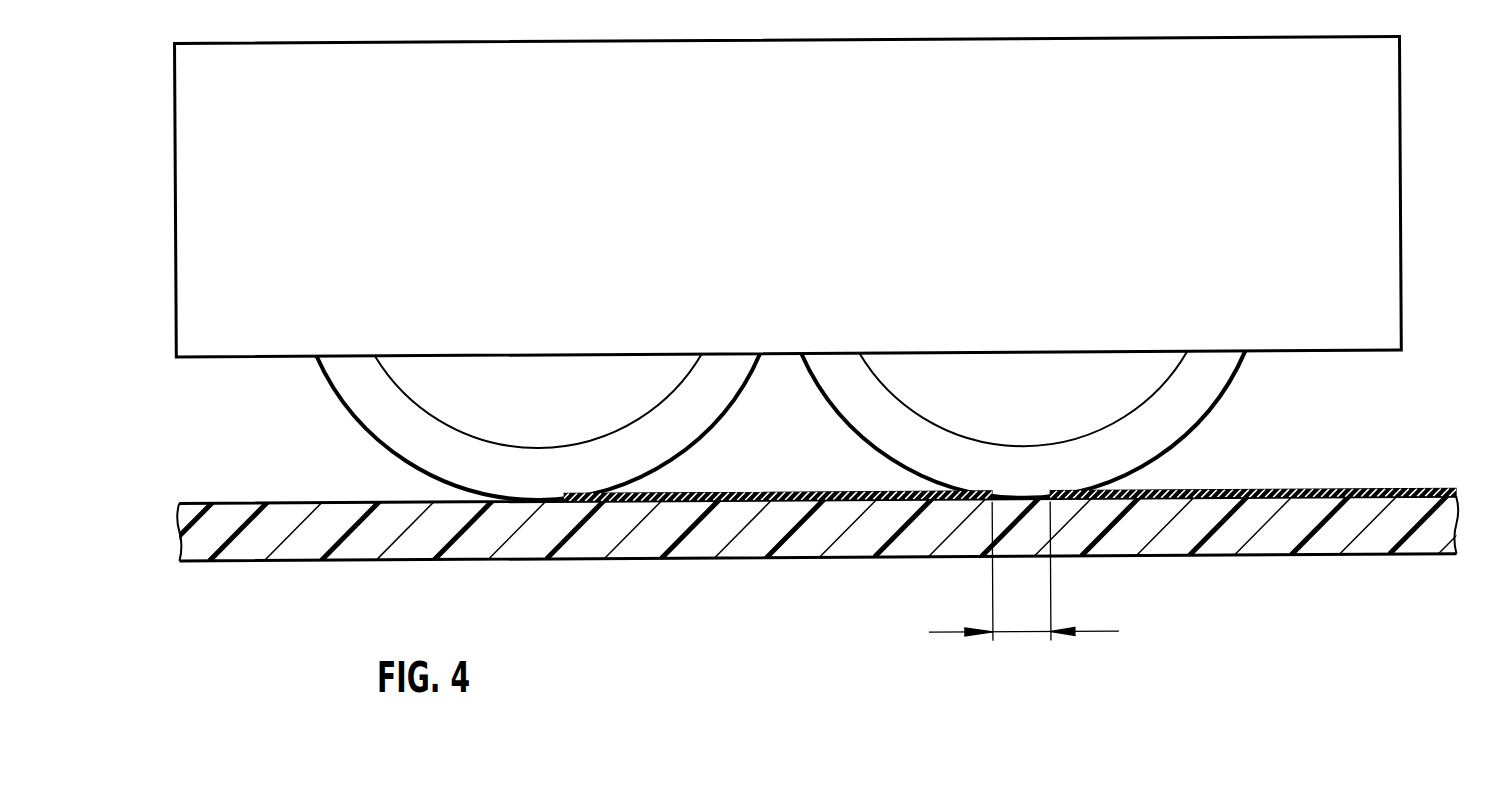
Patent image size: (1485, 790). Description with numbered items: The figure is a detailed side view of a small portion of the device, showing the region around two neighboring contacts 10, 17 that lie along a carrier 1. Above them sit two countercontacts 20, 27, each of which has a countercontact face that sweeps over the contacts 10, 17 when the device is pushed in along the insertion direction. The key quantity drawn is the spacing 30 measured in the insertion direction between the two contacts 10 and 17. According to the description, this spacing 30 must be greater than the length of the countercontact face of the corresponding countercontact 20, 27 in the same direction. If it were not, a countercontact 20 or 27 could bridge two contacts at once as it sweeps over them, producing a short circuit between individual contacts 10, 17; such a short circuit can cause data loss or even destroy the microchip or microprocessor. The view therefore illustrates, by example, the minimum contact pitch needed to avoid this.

The plate / substrate 1 is at (1325, 538).
The contact 10 is at (833, 508).
The contact 17 is at (1218, 504).
The countercontact 20 is at (572, 474).
The countercontact 27 is at (1048, 476).
The spacing 30 is at (1025, 633).